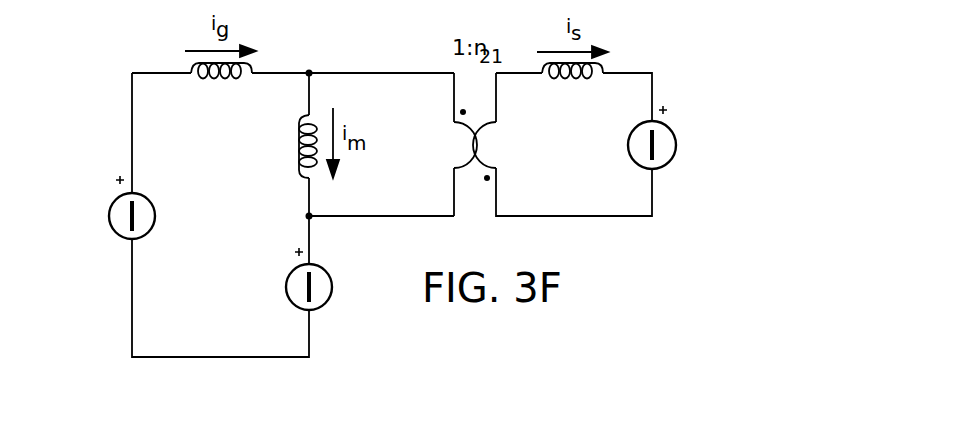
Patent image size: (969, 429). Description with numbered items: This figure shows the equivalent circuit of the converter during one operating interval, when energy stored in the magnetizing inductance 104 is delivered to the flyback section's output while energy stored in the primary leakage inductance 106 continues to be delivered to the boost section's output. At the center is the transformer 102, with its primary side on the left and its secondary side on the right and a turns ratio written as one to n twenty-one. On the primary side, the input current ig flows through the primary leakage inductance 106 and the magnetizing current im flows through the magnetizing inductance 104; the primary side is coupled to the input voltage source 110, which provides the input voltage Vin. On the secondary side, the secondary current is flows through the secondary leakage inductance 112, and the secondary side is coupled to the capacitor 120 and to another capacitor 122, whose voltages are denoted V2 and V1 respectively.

The transformer 102 is at (481, 146).
The magnetizing inductance 104 is at (297, 148).
The primary leakage inductance 106 is at (190, 70).
The input voltage source 110 is at (109, 216).
The secondary leakage inductance 112 is at (605, 68).
The capacitor 120 is at (676, 146).
The capacitor 122 is at (286, 287).